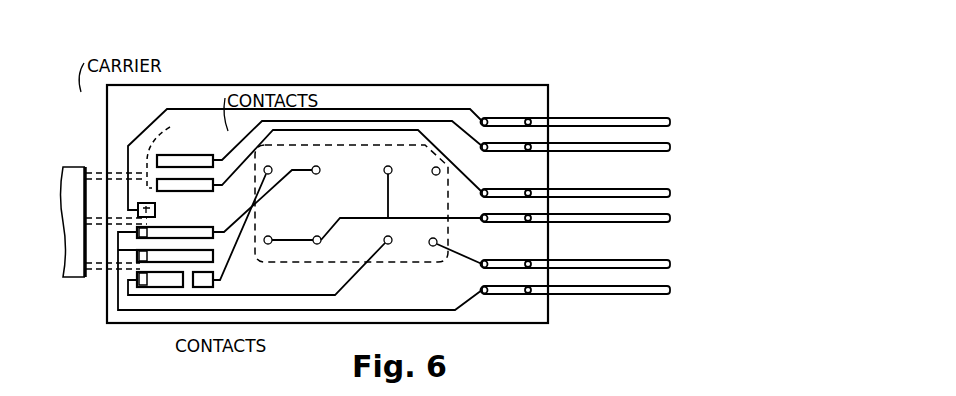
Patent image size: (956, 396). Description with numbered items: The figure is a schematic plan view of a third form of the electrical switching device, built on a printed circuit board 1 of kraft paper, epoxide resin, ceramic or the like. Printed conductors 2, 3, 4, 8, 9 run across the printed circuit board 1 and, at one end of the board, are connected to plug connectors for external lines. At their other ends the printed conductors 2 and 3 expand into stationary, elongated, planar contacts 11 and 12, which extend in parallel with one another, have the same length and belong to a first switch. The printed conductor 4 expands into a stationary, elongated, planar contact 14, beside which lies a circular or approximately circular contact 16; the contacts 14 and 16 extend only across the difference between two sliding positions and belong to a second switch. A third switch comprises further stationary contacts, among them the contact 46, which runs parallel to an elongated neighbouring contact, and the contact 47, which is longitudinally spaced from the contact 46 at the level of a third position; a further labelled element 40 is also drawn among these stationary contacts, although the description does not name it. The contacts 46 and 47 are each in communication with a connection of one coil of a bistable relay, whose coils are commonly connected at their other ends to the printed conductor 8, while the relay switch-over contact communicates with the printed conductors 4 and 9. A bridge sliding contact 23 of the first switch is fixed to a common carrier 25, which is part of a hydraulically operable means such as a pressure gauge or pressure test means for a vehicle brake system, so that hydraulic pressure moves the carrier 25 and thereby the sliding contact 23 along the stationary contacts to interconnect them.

The printed circuit board 1 is at (513, 94).
The printed conductor 2 is at (440, 124).
The printed conductor 3 is at (466, 187).
The printed conductor 4 is at (477, 112).
The printed conductor 8 is at (466, 219).
The printed conductor 9 is at (463, 262).
The contact 11 is at (197, 156).
The contact 12 is at (188, 192).
The contact 14 is at (172, 228).
The contact 16 is at (138, 207).
The sliding contact 23 is at (171, 152).
The carrier 25 is at (74, 167).
The contact 40 is at (204, 250).
The contact 46 is at (158, 282).
The contact 47 is at (216, 287).